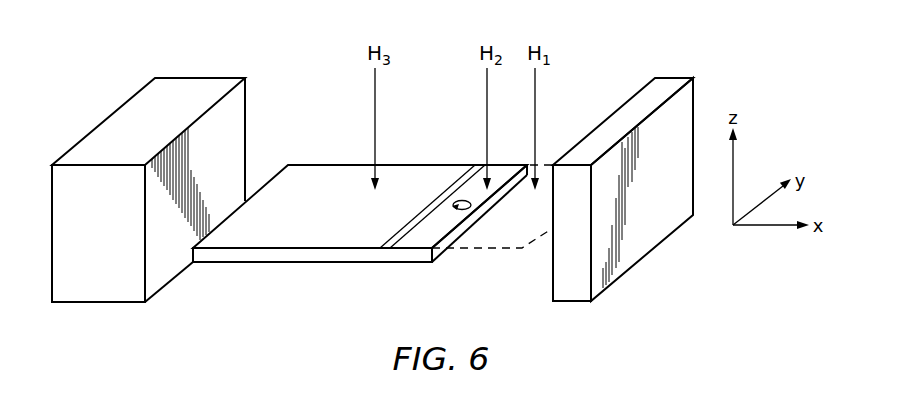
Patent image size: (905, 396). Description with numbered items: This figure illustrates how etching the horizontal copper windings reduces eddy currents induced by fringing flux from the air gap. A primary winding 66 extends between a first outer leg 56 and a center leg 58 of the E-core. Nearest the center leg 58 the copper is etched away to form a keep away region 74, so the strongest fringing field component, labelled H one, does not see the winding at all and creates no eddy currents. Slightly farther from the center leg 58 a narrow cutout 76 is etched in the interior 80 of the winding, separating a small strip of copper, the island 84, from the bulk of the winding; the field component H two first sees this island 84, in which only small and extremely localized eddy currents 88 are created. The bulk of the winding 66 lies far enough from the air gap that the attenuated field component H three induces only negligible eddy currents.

The first outer leg 56 is at (112, 120).
The center leg 58 is at (667, 83).
The primary winding 66 is at (287, 263).
The keep away region 74 is at (516, 233).
The cutout 76 is at (382, 249).
The interior of the winding 80 is at (297, 220).
The island 84 is at (425, 238).
The eddy currents 88 is at (460, 200).